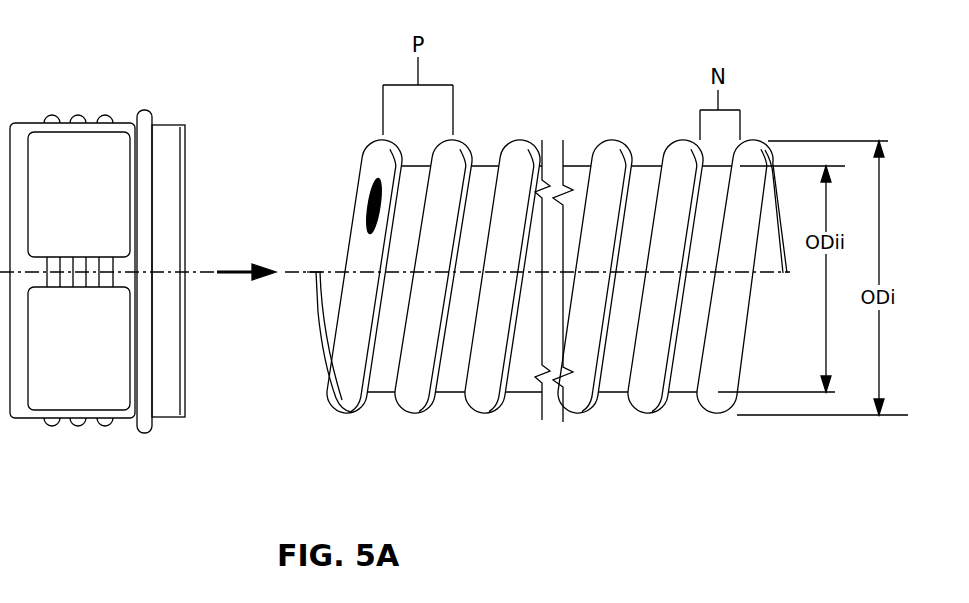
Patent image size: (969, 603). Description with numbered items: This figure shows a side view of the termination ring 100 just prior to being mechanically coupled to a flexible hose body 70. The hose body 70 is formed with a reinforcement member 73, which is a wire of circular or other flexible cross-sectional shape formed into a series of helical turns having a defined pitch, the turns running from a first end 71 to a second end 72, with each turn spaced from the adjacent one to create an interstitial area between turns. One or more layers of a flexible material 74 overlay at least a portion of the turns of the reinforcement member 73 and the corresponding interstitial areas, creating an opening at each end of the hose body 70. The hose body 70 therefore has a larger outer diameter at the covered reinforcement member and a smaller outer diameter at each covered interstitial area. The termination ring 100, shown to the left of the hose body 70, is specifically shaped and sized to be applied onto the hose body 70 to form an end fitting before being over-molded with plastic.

The flexible hose body 70 is at (551, 293).
The first end 71 is at (316, 338).
The second end 72 is at (787, 285).
The reinforcement member 73 is at (371, 203).
The flexible material 74 is at (642, 185).
The termination ring 100 is at (85, 431).